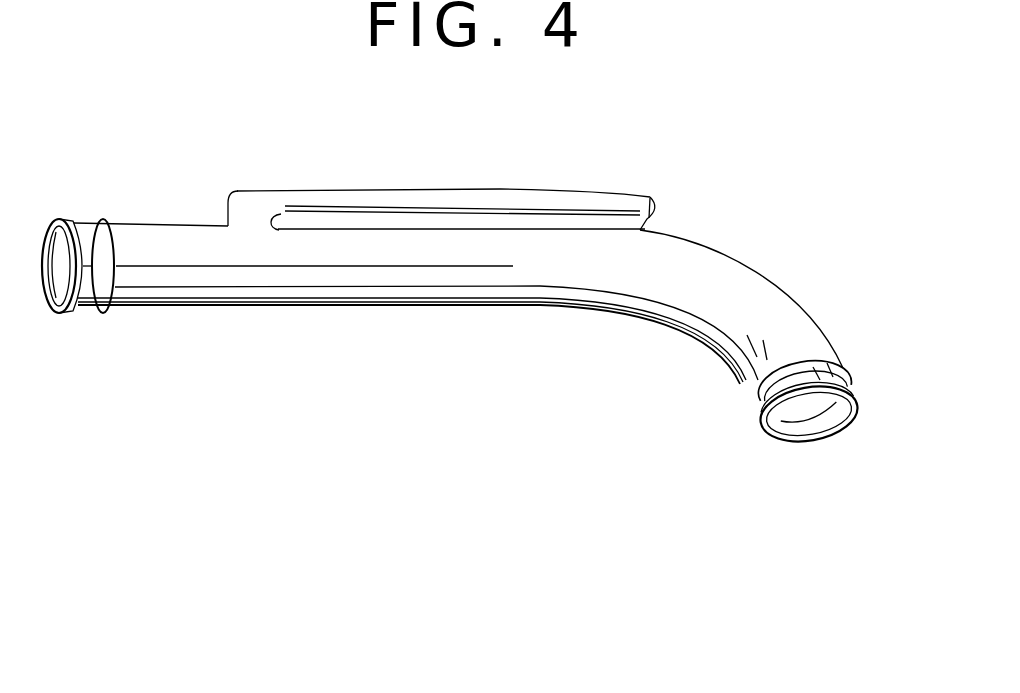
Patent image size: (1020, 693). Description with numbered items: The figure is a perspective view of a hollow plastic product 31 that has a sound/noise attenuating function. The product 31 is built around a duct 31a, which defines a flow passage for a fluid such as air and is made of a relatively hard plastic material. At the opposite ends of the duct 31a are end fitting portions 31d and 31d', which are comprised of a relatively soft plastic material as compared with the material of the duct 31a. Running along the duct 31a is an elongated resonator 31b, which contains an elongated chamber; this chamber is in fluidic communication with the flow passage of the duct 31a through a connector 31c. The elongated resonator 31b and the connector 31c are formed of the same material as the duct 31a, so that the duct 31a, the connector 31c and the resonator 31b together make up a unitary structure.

The hollow plastic product 31 is at (683, 257).
The duct 31a is at (375, 273).
The elongated resonator 31b is at (398, 198).
The connector 31c is at (250, 213).
The end fitting portion 31d is at (127, 295).
The end fitting portion 31d' is at (835, 350).